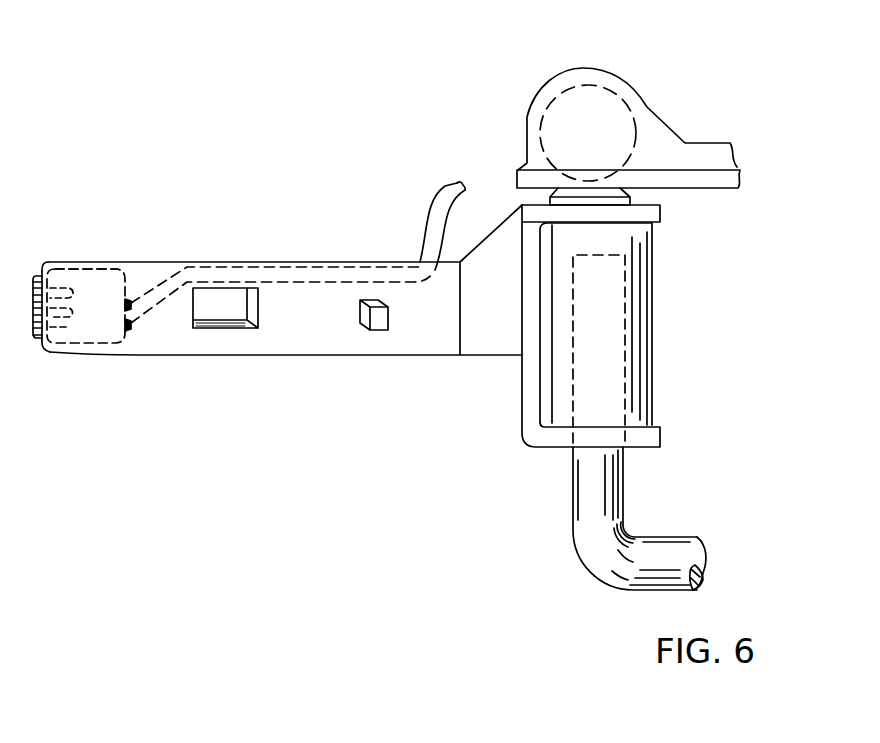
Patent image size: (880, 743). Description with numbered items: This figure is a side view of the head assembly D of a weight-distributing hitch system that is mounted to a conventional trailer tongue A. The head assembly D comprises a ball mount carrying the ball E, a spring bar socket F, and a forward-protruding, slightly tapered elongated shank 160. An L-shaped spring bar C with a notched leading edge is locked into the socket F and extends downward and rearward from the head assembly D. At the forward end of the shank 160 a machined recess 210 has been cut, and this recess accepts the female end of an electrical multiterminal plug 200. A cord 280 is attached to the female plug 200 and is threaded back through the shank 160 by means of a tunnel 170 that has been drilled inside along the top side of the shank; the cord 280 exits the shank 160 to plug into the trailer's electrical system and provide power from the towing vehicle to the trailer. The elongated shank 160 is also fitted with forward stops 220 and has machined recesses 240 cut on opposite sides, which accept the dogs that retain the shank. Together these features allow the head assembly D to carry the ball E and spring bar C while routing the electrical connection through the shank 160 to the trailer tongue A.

The elongated shank 160 is at (300, 337).
The tunnel 170 is at (207, 262).
The electrical multiterminal plug 200 is at (95, 323).
The machined recess 210 is at (95, 270).
The forward stops 220 is at (375, 318).
The machined recesses 240 is at (233, 307).
The cord 280 is at (448, 203).
The trailer tongue A is at (700, 157).
The spring bar C is at (677, 550).
The head assembly D is at (647, 213).
The ball E is at (592, 107).
The spring bar socket F is at (613, 308).